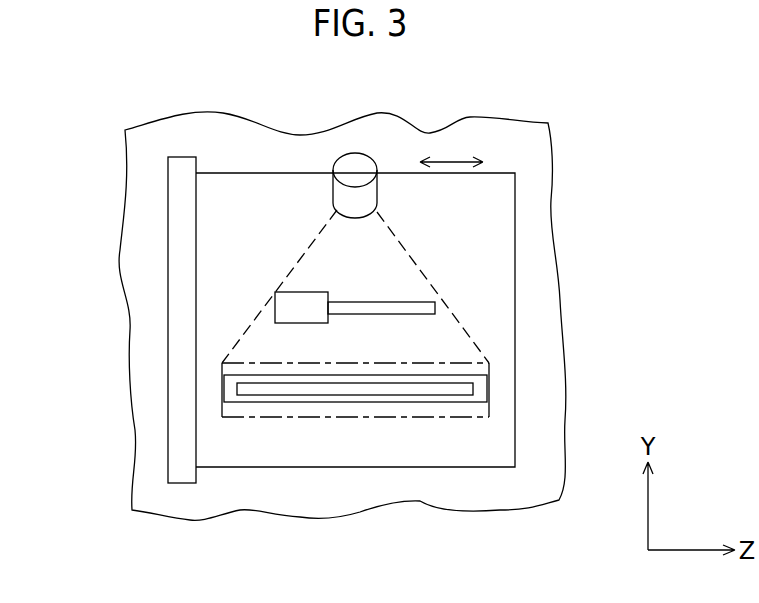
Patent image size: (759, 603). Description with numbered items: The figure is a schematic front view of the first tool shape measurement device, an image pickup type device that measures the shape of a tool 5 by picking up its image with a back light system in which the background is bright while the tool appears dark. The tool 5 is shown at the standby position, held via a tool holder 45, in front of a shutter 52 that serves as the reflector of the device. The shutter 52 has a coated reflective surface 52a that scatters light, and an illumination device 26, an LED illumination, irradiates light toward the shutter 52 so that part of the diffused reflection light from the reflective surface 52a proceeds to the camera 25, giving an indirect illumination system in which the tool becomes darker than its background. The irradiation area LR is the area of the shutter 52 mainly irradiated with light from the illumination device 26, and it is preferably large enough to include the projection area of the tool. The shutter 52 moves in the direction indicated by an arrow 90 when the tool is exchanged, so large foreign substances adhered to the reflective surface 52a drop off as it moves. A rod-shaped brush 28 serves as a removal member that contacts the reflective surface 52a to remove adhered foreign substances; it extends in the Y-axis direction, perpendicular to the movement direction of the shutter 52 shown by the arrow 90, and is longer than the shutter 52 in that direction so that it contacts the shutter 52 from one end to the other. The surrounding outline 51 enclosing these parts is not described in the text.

The housing 51 is at (503, 135).
The brush 28 is at (180, 172).
The shutter 52 is at (255, 172).
The reflective surface 52a is at (497, 217).
The camera 25 is at (355, 165).
The arrow 90 is at (455, 160).
The tool holder 45 is at (292, 310).
The tool 5 is at (398, 305).
The illumination device 26 is at (287, 400).
The irradiation area LR is at (447, 415).